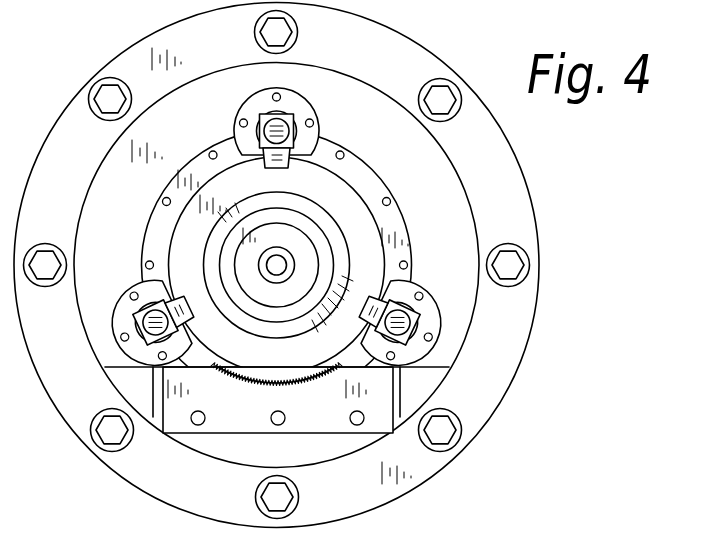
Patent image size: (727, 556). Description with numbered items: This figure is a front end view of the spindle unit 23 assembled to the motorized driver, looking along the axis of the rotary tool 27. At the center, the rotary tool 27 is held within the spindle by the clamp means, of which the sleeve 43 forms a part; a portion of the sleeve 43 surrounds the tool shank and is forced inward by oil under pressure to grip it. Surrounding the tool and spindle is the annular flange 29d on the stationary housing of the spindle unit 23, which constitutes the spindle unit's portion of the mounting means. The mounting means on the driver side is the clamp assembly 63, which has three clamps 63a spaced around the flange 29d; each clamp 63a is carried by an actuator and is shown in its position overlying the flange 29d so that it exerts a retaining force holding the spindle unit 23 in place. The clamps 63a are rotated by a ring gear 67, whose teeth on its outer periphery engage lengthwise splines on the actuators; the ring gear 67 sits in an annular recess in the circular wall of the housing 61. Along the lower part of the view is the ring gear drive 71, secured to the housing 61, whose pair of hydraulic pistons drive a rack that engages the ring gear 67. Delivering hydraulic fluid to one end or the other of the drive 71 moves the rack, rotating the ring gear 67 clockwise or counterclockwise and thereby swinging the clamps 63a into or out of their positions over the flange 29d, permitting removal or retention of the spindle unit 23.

The spindle unit 23 is at (366, 174).
The rotary tool 27 is at (282, 264).
The annular flange 29d is at (160, 232).
The sleeve 43 is at (292, 240).
The housing 61 is at (290, 445).
The clamp assembly 63 is at (312, 82).
The clamps 63a is at (278, 168).
The ring gear 67 is at (287, 388).
The ring gear drive 71 is at (228, 446).